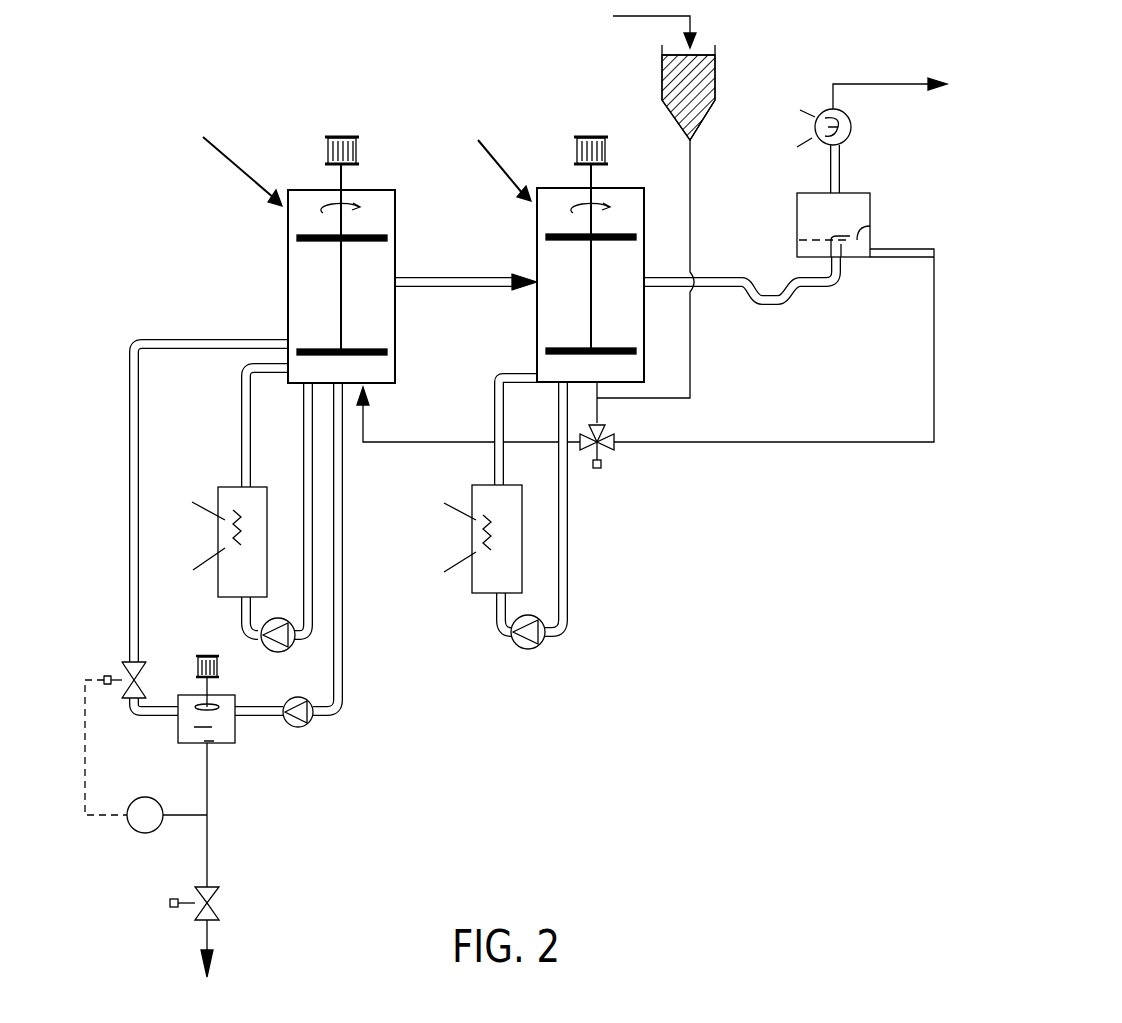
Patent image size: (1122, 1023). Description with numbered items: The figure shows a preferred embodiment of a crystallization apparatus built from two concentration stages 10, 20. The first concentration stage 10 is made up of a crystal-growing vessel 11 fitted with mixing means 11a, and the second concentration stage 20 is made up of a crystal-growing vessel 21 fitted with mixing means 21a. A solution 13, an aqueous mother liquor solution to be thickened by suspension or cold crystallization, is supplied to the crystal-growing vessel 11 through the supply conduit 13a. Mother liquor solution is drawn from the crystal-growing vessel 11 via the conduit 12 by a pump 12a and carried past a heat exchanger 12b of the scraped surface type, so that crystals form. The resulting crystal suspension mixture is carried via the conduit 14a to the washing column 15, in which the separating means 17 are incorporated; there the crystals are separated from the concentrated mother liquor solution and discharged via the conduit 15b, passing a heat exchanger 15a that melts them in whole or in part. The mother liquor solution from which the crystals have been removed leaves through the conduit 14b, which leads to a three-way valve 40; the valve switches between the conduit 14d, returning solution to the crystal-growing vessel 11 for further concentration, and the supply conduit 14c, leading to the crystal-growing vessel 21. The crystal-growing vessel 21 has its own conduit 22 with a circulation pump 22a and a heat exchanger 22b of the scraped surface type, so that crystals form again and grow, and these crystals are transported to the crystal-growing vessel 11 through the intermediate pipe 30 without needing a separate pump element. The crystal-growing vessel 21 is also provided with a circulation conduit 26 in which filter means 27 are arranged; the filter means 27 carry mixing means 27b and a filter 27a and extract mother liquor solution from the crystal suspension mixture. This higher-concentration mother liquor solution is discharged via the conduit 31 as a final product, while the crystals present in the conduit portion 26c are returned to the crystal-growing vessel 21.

The first concentration stage 10 is at (542, 246).
The crystal-growing vessel 11 is at (568, 270).
The mixing means 11a is at (577, 150).
The conduit 12 is at (570, 606).
The pump 12a is at (521, 648).
The heat exchanger 12b is at (472, 578).
The solution 13 is at (662, 78).
The supply conduit 13a is at (690, 190).
The conduit 14a is at (772, 304).
The conduit 14b is at (822, 446).
The supply conduit 14c is at (404, 447).
The conduit 14d is at (603, 405).
The washing column 15 is at (797, 213).
The heat exchanger 15a is at (851, 127).
The conduit 15b is at (870, 84).
The separating means 17 is at (872, 224).
The second concentration stage 20 is at (283, 247).
The crystal-growing vessel 21 is at (317, 278).
The mixing means 21a is at (328, 150).
The conduit 22 is at (242, 396).
The circulation pump 22a is at (270, 653).
The heat exchanger 22b is at (219, 505).
The circulation conduit 26 is at (343, 656).
The conduit portion 26c is at (130, 510).
The filter means 27 is at (242, 743).
The filter 27a is at (190, 738).
The mixing means 27b is at (198, 665).
The intermediate pipe 30 is at (465, 274).
The conduit 31 is at (209, 868).
The three-way valve 40 is at (603, 464).